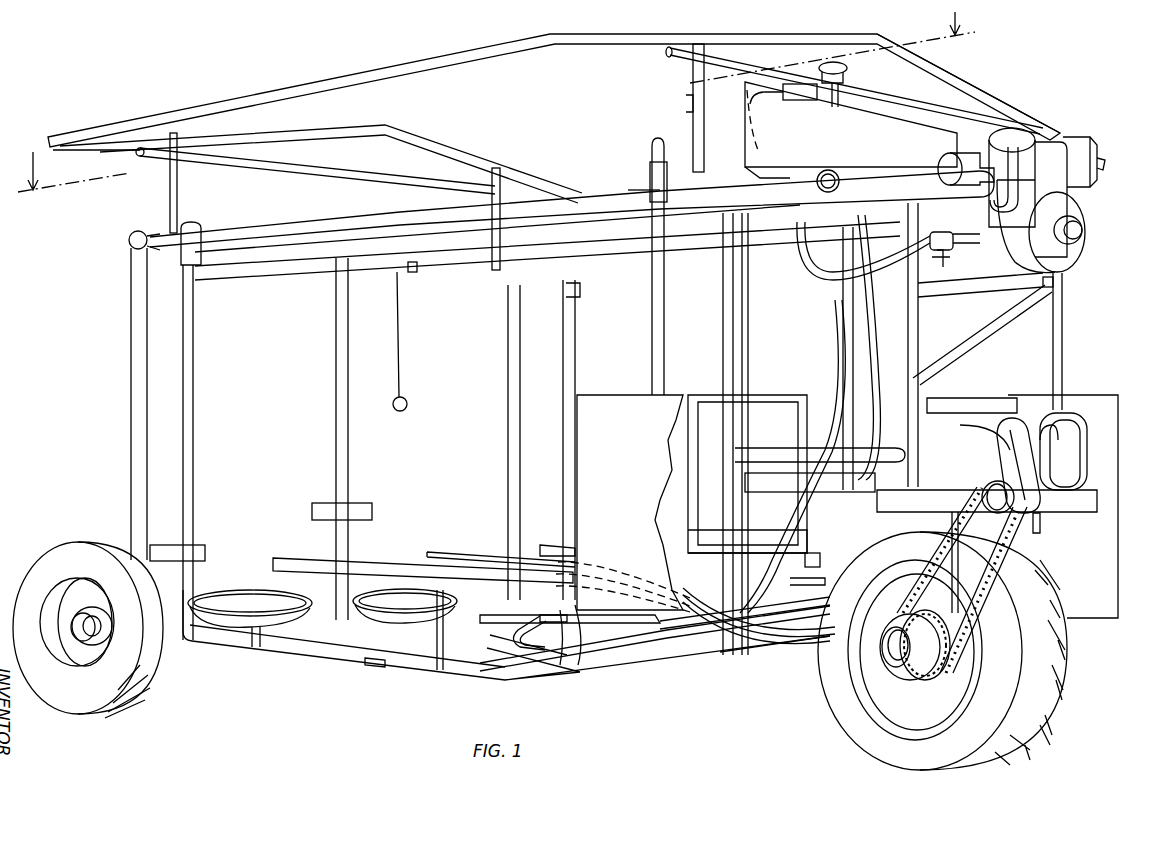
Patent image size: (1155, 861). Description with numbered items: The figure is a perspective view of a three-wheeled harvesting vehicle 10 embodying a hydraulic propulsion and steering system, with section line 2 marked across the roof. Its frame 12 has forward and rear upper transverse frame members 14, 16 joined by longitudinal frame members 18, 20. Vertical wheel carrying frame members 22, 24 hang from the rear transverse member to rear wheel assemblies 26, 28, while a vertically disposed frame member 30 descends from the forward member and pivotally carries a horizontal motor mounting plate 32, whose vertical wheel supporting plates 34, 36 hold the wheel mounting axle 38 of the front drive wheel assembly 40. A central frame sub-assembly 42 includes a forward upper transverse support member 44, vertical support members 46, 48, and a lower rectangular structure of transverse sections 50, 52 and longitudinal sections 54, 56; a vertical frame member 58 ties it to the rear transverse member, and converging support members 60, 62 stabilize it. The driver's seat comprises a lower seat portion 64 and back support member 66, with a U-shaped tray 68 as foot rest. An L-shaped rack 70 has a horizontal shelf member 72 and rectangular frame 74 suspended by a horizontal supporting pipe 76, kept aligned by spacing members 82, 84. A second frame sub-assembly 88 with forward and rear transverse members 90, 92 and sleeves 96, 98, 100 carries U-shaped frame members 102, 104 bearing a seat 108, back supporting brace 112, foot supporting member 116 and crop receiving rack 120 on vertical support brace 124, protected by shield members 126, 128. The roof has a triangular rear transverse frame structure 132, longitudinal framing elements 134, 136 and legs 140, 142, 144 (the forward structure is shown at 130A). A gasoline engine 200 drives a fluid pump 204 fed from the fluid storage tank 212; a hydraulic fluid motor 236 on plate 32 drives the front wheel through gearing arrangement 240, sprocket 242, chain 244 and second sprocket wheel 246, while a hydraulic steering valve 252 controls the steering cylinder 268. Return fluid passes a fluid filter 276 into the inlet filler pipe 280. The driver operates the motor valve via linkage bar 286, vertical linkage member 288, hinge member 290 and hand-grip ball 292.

The harvesting vehicle 10 is at (96, 450).
The frame 12 is at (126, 270).
The forward upper transverse frame member 14 is at (905, 176).
The rear upper transverse frame member 16 is at (144, 230).
The longitudinal frame member 18 is at (627, 258).
The longitudinal frame member 20 is at (316, 218).
The wheel carrying frame member 22 is at (518, 352).
The wheel carrying frame member 24 is at (140, 348).
The rear wheel assembly 26 is at (497, 533).
The rear wheel assembly 28 is at (146, 658).
The vertically disposed frame member 30 is at (918, 334).
The horizontal motor mounting plate 32 is at (1085, 506).
The vertical wheel supporting plate 34 is at (916, 692).
The vertical wheel supporting plate 36 is at (1035, 535).
The wheel mounting axle 38 is at (890, 653).
The front drive wheel assembly 40 is at (1040, 726).
The frame sub-assembly 42 is at (361, 450).
The forward upper transverse support member 44 is at (725, 250).
The vertical support member 46 is at (726, 304).
The vertical support member 48 is at (840, 305).
The forward transverse section 50 is at (771, 650).
The rear transverse section 52 is at (350, 622).
The longitudinal section 54 is at (697, 634).
The longitudinal section 56 is at (690, 650).
The vertically disposed frame member 58 is at (347, 470).
The converging support member 60 is at (770, 450).
The converging support member 62 is at (856, 424).
The lower seat portion 64 is at (352, 598).
The back support member 66 is at (368, 504).
The U-shaped tray 68 is at (510, 655).
The L-shaped rack 70 is at (747, 590).
The horizontal shelf member 72 is at (538, 541).
The rectangular frame 74 is at (722, 396).
The horizontal supporting pipe 76 is at (746, 340).
The spacing member 82 is at (805, 560).
The spacing member 84 is at (708, 530).
The second frame sub-assembly 88 is at (172, 406).
The forward transverse member 90 is at (651, 174).
The rear transverse member 92 is at (303, 258).
The sleeve 96 is at (651, 152).
The sleeve 98 is at (568, 292).
The sleeve 100 is at (202, 262).
The U-shaped frame member 102 is at (576, 325).
The U-shaped frame member 104 is at (196, 306).
The seat 108 is at (216, 596).
The back supporting brace 112 is at (206, 550).
The foot supporting member 116 is at (376, 664).
The crop receiving rack 120 is at (372, 564).
The vertical support brace 124 is at (440, 670).
The shield member 126 is at (1085, 612).
The shield member 128 is at (592, 607).
The canopy 130A is at (863, 84).
The rear transverse frame structure 132 is at (355, 142).
The longitudinal framing element 134 is at (628, 192).
The longitudinal framing element 136 is at (237, 106).
The forward vertical leg 140 is at (692, 100).
The rear vertical leg 142 is at (490, 190).
The rear vertical leg 144 is at (180, 178).
The gasoline engine 200 is at (1060, 188).
The fluid pump 204 is at (958, 268).
The fluid storage tank 212 is at (851, 130).
The hydraulic fluid motor 236 is at (1072, 412).
The gearing arrangement 240 is at (1016, 412).
The sprocket 242 is at (1020, 512).
The chain 244 is at (980, 590).
The second sprocket wheel 246 is at (960, 626).
The hydraulic steering valve 252 is at (562, 633).
The hydraulic steering cylinder 268 is at (810, 483).
The fluid filter 276 is at (810, 98).
The inlet filler pipe 280 is at (848, 68).
The linkage bar 286 is at (508, 232).
The vertical linkage member 288 is at (400, 335).
The hinge member 290 is at (413, 270).
The hand-grip ball 292 is at (403, 397).
The section line 2 is at (496, 101).